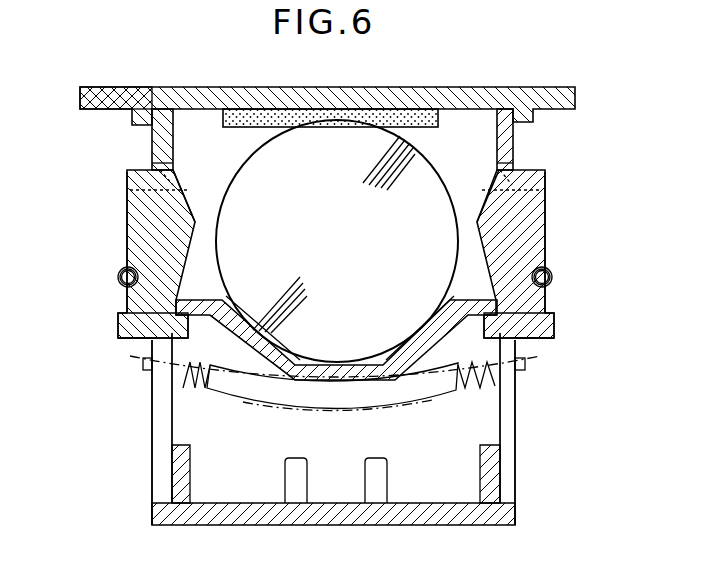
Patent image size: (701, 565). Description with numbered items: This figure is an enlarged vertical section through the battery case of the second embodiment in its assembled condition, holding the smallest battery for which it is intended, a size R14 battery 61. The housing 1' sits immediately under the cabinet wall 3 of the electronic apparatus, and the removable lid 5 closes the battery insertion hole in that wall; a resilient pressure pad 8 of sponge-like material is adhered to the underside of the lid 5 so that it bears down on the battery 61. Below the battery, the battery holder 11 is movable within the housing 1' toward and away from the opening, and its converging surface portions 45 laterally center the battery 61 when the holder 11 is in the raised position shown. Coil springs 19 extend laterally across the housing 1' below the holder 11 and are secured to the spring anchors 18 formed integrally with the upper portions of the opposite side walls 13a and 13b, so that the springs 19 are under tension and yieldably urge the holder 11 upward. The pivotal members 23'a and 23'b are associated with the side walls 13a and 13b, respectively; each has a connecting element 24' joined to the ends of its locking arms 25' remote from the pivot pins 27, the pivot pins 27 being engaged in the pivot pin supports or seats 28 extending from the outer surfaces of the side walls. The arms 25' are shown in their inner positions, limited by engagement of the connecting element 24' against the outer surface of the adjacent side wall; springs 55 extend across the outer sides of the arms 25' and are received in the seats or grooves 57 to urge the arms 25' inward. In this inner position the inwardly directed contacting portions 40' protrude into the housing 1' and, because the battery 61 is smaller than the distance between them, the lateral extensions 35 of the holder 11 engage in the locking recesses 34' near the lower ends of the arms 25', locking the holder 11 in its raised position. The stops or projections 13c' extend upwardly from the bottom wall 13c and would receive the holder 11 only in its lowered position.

The cabinet wall 3 is at (118, 94).
The removable lid 5 is at (212, 94).
The resilient pressure pad 8 is at (432, 106).
The size R14 battery 61 is at (420, 160).
The battery holder 11 is at (300, 352).
The pivotal member 23'a is at (118, 254).
The pivotal member 23'b is at (548, 254).
The pivot pin 27 is at (160, 172).
The contacting portion 40' is at (336, 196).
The pivot pin support or seat 28 is at (130, 190).
The locking arm 25' is at (324, 242).
The seat or groove 57 is at (118, 274).
The spring 55 is at (122, 284).
The connecting element 24' is at (333, 326).
The locking recess 34' is at (339, 351).
The lateral extension 35 is at (184, 304).
The converging surface portion 45 is at (246, 300).
The housing 1' is at (363, 429).
The side wall 13a is at (151, 418).
The side wall 13b is at (516, 412).
The bottom wall 13c is at (333, 503).
The stop or projection 13c' is at (336, 474).
The spring anchor 18 is at (142, 366).
The coil spring 19 is at (232, 396).